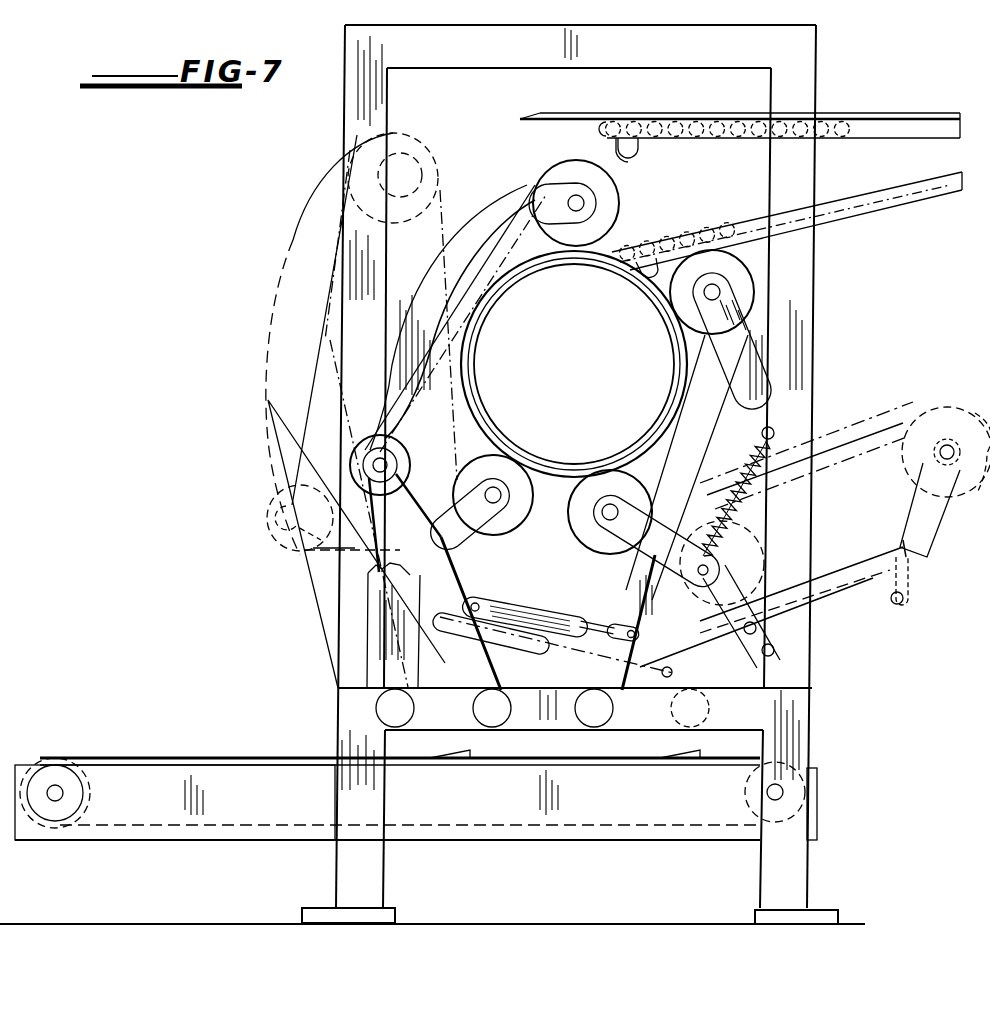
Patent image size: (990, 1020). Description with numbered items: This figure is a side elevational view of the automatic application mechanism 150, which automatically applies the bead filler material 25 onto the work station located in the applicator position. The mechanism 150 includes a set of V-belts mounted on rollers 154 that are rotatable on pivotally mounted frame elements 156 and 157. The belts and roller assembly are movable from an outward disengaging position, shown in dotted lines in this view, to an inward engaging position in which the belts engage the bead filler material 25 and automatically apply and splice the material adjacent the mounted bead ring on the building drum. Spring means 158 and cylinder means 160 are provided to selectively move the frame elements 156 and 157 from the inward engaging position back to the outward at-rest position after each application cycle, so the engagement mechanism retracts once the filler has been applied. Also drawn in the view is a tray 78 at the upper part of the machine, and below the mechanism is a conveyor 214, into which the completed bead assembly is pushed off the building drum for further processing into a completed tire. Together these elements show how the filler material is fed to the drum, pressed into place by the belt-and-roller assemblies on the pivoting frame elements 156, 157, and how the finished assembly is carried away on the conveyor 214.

The bead filler material 25 is at (612, 240).
The tray 78 is at (878, 140).
The automatic application mechanism 150 is at (282, 422).
The rollers 154 is at (596, 159).
The frame element 156 is at (522, 190).
The frame element 157 is at (743, 405).
The spring means 158 is at (780, 447).
The cylinder means 160 is at (558, 610).
The conveyor 214 is at (230, 760).